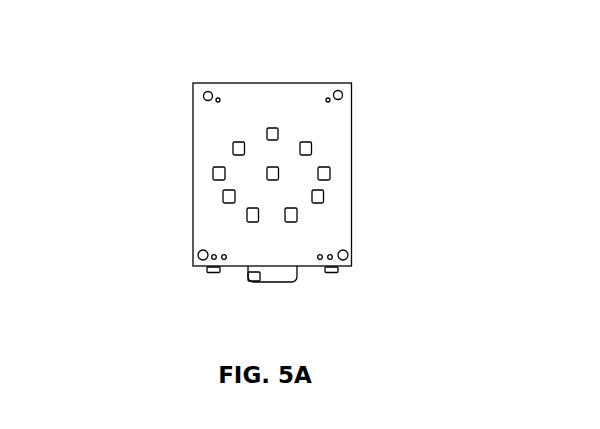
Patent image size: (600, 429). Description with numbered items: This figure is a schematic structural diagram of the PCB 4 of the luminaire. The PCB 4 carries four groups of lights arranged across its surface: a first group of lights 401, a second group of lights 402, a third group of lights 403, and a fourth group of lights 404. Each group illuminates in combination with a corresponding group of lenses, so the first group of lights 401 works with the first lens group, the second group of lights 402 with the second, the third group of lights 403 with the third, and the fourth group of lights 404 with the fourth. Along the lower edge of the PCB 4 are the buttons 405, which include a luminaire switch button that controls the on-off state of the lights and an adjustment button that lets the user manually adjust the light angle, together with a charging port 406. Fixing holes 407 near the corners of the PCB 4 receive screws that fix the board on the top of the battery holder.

The PCB 4 is at (352, 83).
The first group of lights 401 is at (245, 150).
The second group of lights 402 is at (229, 190).
The third group of lights 403 is at (300, 150).
The fourth group of lights 404 is at (278, 178).
The buttons 405 is at (218, 272).
The charging port 406 is at (295, 284).
The fixing holes 407 is at (204, 96).